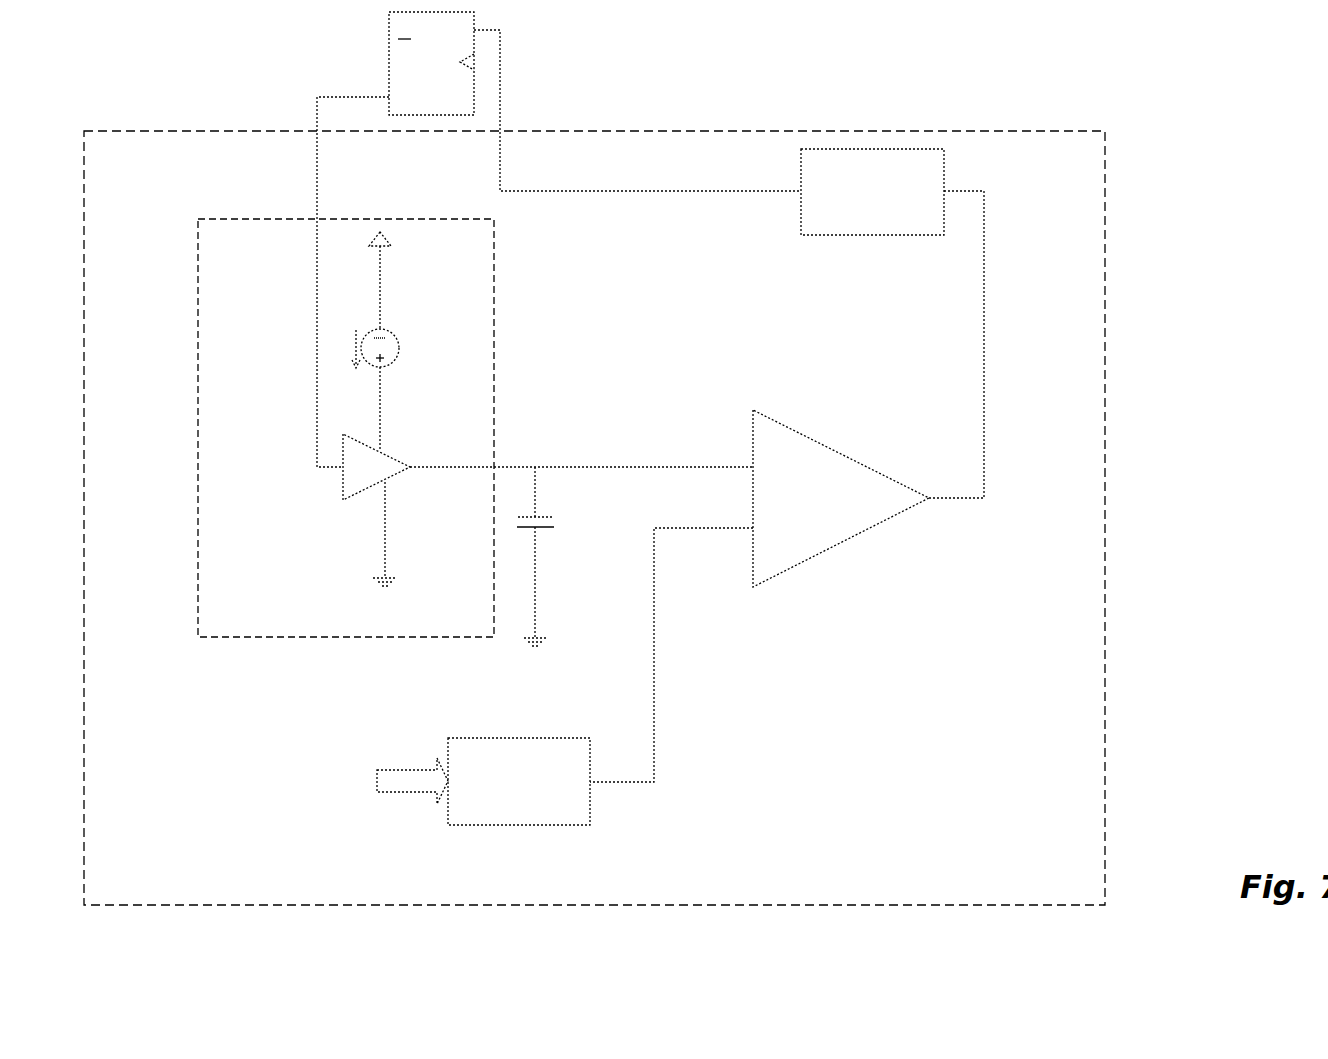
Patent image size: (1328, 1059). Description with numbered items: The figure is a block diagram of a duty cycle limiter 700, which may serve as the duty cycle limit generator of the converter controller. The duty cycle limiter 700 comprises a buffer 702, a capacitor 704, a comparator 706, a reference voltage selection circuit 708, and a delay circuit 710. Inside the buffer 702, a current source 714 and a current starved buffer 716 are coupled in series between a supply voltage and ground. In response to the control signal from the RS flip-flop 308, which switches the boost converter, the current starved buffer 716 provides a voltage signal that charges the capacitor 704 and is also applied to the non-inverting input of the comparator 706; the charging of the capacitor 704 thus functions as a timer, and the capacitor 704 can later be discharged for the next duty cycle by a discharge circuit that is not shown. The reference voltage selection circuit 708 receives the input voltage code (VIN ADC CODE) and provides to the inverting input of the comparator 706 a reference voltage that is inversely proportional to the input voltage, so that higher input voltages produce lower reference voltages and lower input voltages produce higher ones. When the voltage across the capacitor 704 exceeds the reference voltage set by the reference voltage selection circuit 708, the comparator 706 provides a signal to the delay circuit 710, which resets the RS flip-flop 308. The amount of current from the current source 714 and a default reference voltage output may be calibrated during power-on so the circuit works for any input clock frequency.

The duty cycle limiter 700 is at (1112, 540).
The RS flip-flop 308 is at (389, 17).
The buffer 702 is at (198, 568).
The capacitor 704 is at (542, 528).
The comparator 706 is at (751, 570).
The reference voltage selection circuit 708 is at (448, 828).
The delay circuit 710 is at (801, 235).
The current source 714 is at (394, 366).
The current starved buffer 716 is at (343, 492).